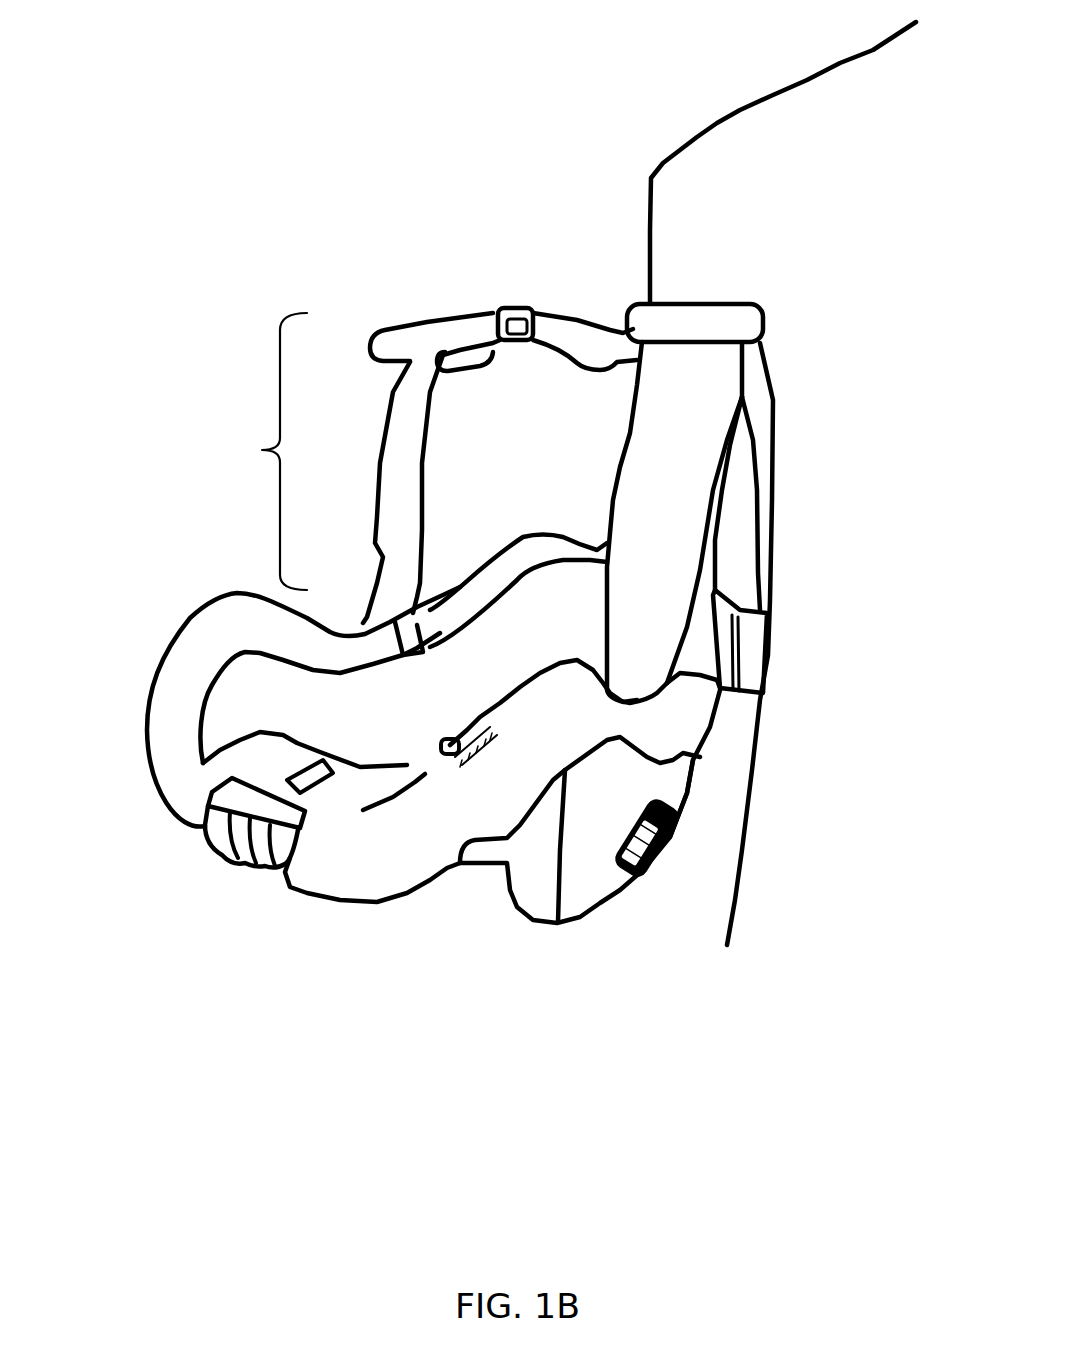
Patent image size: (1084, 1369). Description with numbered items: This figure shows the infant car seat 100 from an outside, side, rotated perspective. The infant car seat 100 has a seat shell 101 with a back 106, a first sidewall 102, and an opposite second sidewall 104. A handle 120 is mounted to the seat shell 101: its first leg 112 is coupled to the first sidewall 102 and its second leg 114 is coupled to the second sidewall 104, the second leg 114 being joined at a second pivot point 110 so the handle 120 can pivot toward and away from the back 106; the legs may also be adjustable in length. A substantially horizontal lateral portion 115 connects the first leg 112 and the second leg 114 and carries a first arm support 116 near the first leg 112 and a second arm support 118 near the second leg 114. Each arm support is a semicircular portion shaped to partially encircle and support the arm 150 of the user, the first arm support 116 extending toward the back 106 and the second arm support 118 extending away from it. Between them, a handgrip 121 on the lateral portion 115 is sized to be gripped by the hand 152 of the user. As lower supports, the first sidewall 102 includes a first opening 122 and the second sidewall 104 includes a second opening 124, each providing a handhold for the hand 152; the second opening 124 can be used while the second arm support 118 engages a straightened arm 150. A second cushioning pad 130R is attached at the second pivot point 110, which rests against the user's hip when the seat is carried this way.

The infant car seat 100 is at (784, 1208).
The seat shell 101 is at (533, 890).
The first sidewall 102 is at (205, 611).
The second sidewall 104 is at (660, 723).
The back 106 is at (578, 584).
The second pivot point 110 is at (765, 608).
The first leg 112 is at (383, 427).
The second leg 114 is at (773, 437).
The lateral portion 115 is at (462, 322).
The first arm support 116 is at (400, 331).
The second arm support 118 is at (767, 328).
The handle 120 is at (256, 451).
The handgrip 121 is at (556, 322).
The first opening 122 is at (441, 752).
The second opening 124 is at (675, 840).
The second cushioning pad 130R is at (767, 660).
The arm 150 is at (720, 397).
The hand 152 is at (668, 852).